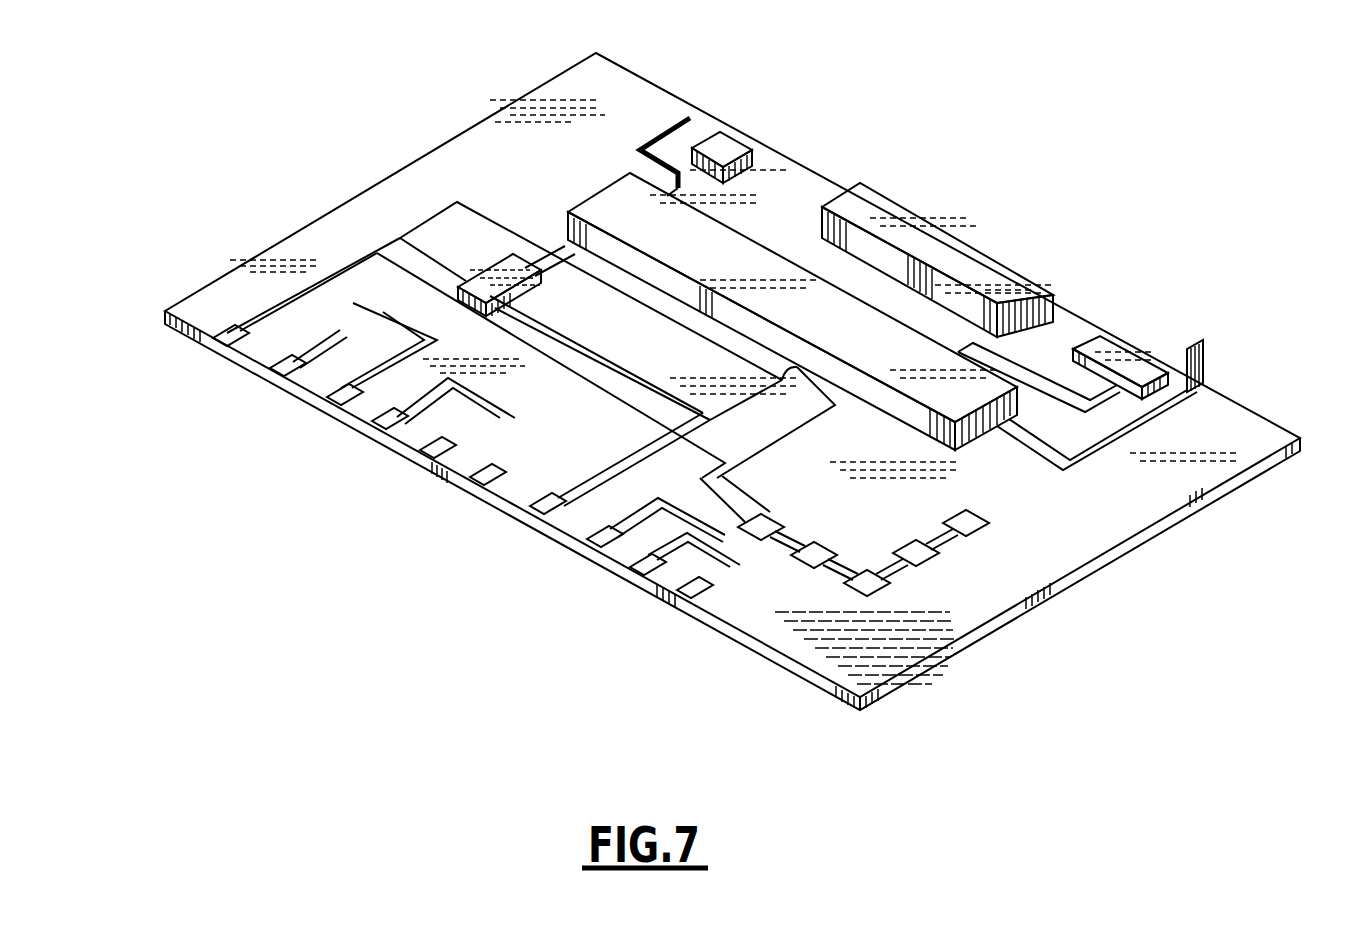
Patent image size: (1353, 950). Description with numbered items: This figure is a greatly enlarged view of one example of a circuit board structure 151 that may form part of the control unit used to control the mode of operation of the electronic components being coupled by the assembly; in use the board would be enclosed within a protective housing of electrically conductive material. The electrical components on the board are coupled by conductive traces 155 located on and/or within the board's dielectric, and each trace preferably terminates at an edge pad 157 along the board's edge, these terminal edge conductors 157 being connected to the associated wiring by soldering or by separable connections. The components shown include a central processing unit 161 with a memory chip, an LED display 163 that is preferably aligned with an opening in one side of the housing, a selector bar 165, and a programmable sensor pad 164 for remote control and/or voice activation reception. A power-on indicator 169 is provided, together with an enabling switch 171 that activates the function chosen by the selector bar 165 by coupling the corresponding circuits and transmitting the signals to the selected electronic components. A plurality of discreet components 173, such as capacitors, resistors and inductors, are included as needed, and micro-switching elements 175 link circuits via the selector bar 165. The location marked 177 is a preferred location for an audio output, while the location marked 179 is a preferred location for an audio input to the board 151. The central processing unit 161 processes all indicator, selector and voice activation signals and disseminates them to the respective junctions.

The circuit board structure 151 is at (1235, 490).
The conductive traces 155 is at (760, 458).
The edge pads 157 is at (286, 375).
The central processing unit 161 is at (592, 198).
The LED display 163 is at (1020, 268).
The programmable sensor pad 164 is at (1203, 350).
The selector bar 165 is at (1107, 345).
The power-on indicator 169 is at (690, 118).
The enabling switch 171 is at (723, 152).
The discreet components 173 is at (877, 583).
The micro-switching elements 175 is at (523, 300).
The audio output location 177 is at (213, 340).
The audio input location 179 is at (546, 513).